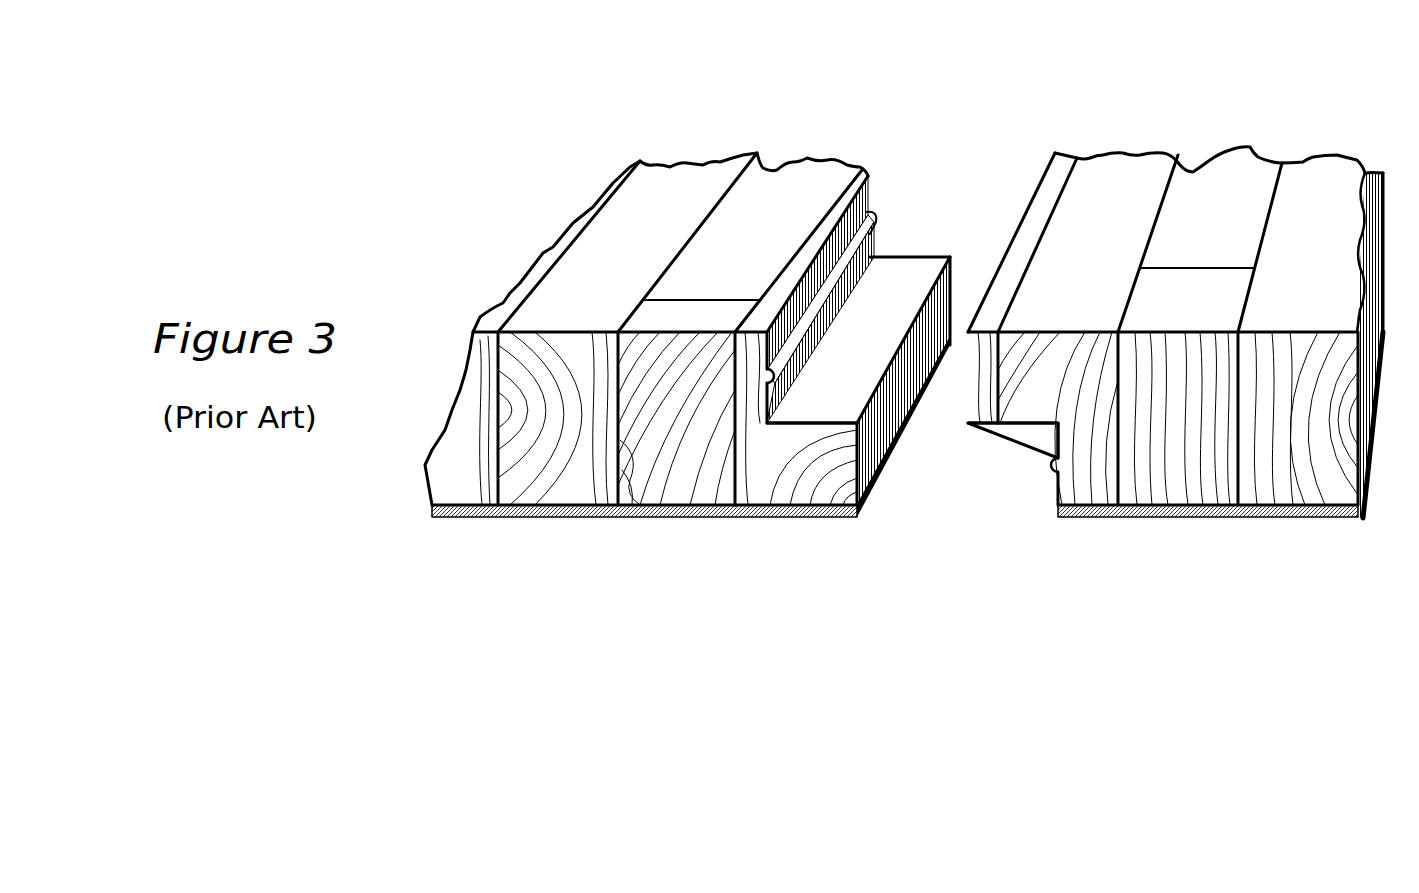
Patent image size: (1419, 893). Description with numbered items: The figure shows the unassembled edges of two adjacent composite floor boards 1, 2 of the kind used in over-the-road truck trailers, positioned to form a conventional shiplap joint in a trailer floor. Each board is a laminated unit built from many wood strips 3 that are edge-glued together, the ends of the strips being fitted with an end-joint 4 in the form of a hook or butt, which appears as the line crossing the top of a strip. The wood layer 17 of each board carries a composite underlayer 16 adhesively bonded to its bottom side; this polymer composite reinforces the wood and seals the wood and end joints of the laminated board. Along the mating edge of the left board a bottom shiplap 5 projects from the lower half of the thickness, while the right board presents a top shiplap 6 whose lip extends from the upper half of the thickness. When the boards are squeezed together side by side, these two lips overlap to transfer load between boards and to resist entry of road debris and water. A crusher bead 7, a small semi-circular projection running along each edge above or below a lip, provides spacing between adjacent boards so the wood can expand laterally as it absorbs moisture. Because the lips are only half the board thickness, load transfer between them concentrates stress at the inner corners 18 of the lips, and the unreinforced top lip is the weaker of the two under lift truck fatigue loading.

The wood floor board 1 is at (497, 580).
The wood floor board 2 is at (1240, 580).
The wood strips 3 is at (798, 198).
The end-joint 4 is at (1215, 266).
The bottom shiplap 5 is at (898, 288).
The top shiplap 6 is at (965, 468).
The crusher bead 7 is at (862, 233).
The composite underlayer 16 is at (667, 510).
The wood layer 17 is at (681, 158).
The inner corners 18 is at (1013, 513).